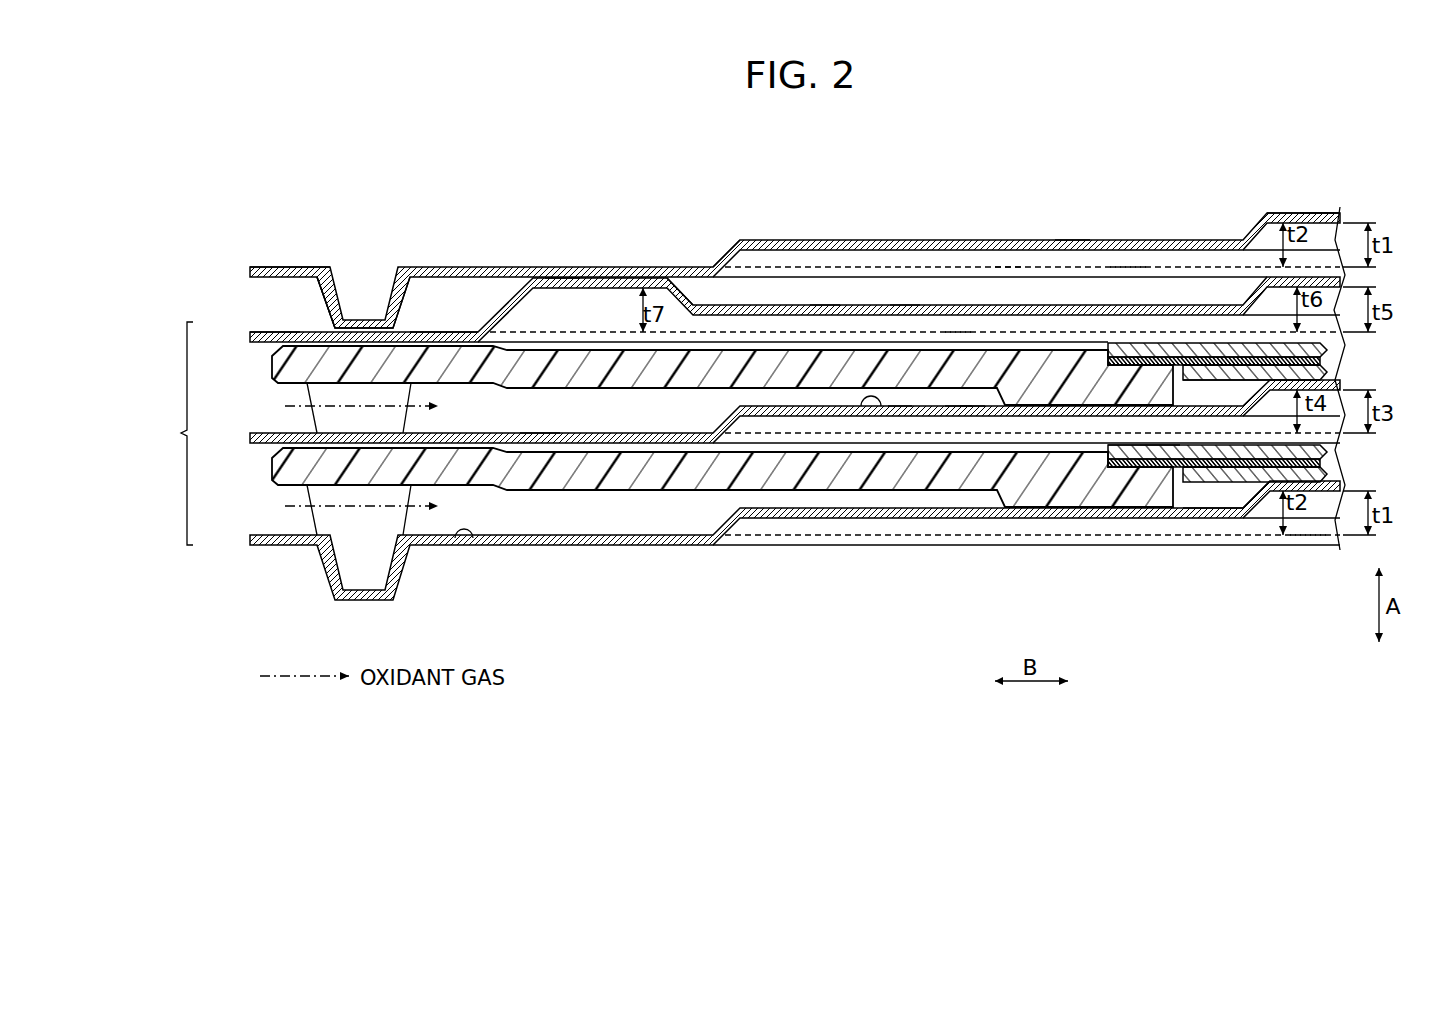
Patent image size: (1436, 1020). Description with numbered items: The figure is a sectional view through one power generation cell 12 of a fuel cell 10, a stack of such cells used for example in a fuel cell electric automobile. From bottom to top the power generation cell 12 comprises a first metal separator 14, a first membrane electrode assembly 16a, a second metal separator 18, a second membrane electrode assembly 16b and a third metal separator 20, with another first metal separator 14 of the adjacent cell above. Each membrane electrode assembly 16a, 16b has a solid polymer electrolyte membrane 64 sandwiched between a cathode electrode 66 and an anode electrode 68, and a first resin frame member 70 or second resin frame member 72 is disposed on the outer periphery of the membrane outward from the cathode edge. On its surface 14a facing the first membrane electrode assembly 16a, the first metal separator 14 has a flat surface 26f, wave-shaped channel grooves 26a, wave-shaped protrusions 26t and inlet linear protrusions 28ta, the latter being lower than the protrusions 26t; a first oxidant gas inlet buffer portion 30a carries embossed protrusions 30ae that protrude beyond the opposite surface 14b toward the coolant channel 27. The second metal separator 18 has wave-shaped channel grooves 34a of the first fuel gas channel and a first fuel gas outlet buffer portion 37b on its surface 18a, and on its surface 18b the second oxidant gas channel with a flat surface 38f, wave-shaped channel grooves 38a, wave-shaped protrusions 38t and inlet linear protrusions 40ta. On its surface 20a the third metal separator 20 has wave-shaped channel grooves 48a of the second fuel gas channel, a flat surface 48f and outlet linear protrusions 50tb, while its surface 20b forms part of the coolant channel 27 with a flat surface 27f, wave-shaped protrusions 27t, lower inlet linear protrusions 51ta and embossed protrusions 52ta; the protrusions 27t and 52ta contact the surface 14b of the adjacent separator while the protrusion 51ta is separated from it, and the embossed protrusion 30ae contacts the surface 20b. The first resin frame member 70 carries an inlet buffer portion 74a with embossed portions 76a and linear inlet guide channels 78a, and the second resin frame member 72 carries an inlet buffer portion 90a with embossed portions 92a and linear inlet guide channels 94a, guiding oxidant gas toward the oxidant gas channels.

The fuel cell 10 is at (365, 167).
The power generation cell 12 is at (172, 433).
The first metal separator 14 is at (249, 268).
The surface of the first metal separator 14a is at (303, 266).
The surface of the first metal separator 14b is at (283, 273).
The first membrane electrode assembly 16a is at (268, 462).
The second membrane electrode assembly 16b is at (268, 360).
The second metal separator 18 is at (249, 434).
The surface of the second metal separator 18a is at (900, 408).
The surface of the second metal separator 18b is at (859, 408).
The third metal separator 20 is at (249, 334).
The surface of the third metal separator 20a is at (747, 312).
The surface of the third metal separator 20b is at (248, 330).
The wave-shaped channel groove 26a is at (1223, 493).
The flat surface 26f is at (455, 540).
The wave-shaped protrusion 26t is at (1287, 212).
The coolant channel 27 is at (1313, 570).
The flat surface 27f is at (437, 331).
The wave-shaped protrusion 27t is at (1321, 212).
The inlet linear protrusion 28ta is at (1072, 240).
The first oxidant gas inlet buffer portion 30a is at (672, 264).
The embossed protrusion 30ae is at (327, 302).
The wave-shaped channel groove 34a is at (1320, 473).
The first fuel gas outlet buffer portion 37b is at (540, 430).
The wave-shaped channel groove 38a is at (1218, 392).
The flat surface 38f is at (962, 440).
The wave-shaped protrusion 38t is at (1266, 491).
The inlet linear protrusion 40ta is at (958, 408).
The wave-shaped channel groove 48a is at (1320, 370).
The flow field 48f is at (958, 332).
The outlet linear protrusion 50tb is at (905, 304).
The inlet linear protrusion 51ta is at (825, 304).
The embossed protrusion 52ta is at (563, 277).
The solid polymer electrolyte membrane 64 is at (1160, 447).
The cathode electrode 66 is at (1203, 470).
The anode electrode 68 is at (1122, 450).
The first resin frame member 70 is at (1056, 503).
The second resin frame member 72 is at (1069, 408).
The inlet buffer portion 74a is at (549, 495).
The embossed portion 76a is at (307, 494).
The linear inlet guide channel 78a is at (608, 492).
The inlet buffer portion 90a is at (597, 395).
The embossed portion 92a is at (307, 393).
The linear inlet guide channel 94a is at (623, 392).